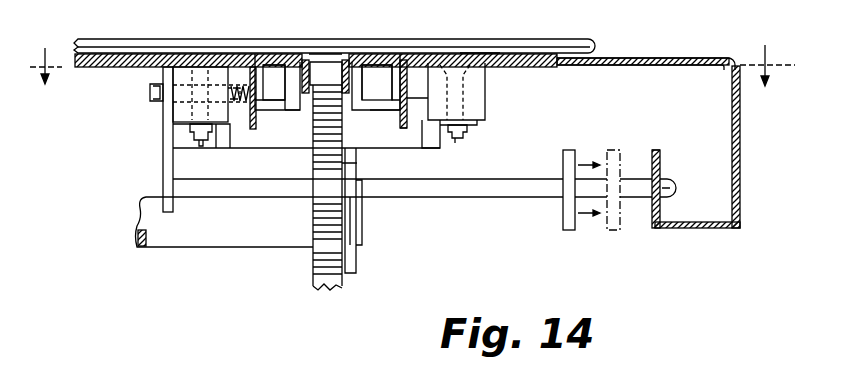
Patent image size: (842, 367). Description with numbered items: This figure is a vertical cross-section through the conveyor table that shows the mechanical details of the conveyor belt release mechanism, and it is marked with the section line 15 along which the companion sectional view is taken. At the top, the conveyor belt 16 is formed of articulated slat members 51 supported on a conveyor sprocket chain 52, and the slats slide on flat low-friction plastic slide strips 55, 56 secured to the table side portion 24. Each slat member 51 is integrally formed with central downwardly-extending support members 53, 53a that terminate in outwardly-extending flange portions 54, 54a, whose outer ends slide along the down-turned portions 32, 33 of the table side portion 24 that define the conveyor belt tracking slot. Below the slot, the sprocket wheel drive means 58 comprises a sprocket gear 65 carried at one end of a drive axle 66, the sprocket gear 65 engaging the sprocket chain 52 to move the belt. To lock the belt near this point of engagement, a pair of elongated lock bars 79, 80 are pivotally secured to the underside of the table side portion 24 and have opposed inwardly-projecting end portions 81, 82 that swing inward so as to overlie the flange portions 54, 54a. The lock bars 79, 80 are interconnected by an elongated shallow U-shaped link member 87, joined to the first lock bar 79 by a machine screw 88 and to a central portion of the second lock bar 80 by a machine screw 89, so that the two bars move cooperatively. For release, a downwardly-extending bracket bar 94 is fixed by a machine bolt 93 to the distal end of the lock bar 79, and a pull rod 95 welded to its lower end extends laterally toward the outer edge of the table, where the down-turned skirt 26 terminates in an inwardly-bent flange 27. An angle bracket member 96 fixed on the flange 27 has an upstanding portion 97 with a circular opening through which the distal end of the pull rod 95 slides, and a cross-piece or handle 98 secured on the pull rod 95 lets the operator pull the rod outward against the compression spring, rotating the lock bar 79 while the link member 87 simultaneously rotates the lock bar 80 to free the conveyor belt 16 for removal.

The section line 15— 15 is at (410, 48).
The conveyor belt 16 is at (558, 38).
The table side portion 24 is at (678, 58).
The down-turned skirt 26 is at (740, 186).
The inwardly-bent flange 27 is at (705, 229).
The down-turned portion 32 is at (402, 132).
The down-turned portion 33 is at (253, 128).
The slat member 51 is at (521, 40).
The conveyor sprocket chain 52 is at (330, 58).
The downwardly-extending support member 53 is at (294, 62).
The downwardly-extending support member 53a is at (356, 62).
The outwardly-extending flange portion 54 is at (290, 112).
The outwardly-extending flange portion 54a is at (384, 112).
The slide strip 55 is at (474, 54).
The slide strip 56 is at (138, 55).
The sprocket wheel drive means 58 is at (382, 264).
The sprocket gear 65 is at (313, 272).
The drive axle 66 is at (262, 246).
The lock bar 79 is at (180, 109).
The lock bar 80 is at (492, 98).
The inwardly-projecting end portion 81 is at (267, 74).
The inwardly-projecting end portion 82 is at (385, 75).
The link member 87 is at (390, 150).
The machine screw 88 is at (200, 145).
The machine screw 89 is at (455, 115).
The machine bolt 93 is at (150, 94).
The bracket bar 94 is at (164, 164).
The pull rod 95 is at (490, 197).
The angle bracket member 96 is at (654, 229).
The upstanding portion 97 is at (661, 156).
The cross-piece or handle 98 is at (566, 229).